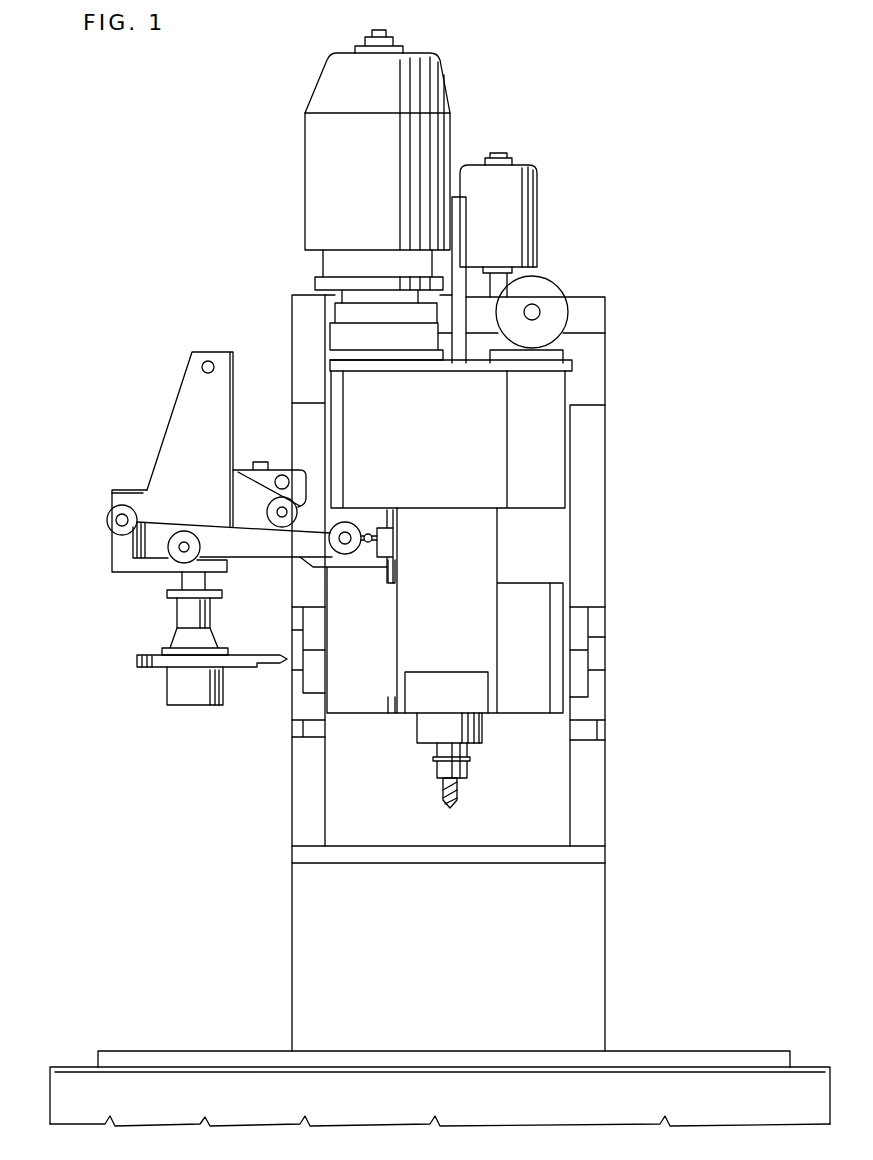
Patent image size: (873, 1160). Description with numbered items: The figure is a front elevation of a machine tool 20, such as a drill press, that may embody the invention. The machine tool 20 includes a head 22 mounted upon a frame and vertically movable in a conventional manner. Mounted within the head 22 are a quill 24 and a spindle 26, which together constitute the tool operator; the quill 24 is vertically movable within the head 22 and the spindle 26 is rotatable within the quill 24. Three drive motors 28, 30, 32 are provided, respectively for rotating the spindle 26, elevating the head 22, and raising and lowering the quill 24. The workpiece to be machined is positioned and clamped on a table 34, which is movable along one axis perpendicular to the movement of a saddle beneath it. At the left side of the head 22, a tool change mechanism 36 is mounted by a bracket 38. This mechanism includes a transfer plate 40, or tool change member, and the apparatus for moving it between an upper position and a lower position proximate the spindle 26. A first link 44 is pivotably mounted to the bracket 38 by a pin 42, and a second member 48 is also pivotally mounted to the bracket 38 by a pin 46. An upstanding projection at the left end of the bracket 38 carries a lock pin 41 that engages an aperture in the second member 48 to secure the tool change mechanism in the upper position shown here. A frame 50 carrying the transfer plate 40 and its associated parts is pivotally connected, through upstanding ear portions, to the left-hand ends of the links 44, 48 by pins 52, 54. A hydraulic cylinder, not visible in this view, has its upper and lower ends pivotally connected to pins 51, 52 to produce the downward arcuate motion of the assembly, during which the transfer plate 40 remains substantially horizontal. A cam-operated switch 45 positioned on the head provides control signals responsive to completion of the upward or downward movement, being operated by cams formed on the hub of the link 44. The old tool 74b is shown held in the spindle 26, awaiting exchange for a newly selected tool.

The machine tool 20 is at (613, 505).
The head 22 is at (553, 440).
The quill 24 is at (430, 731).
The spindle 26 is at (445, 750).
The drive motor 28 is at (325, 146).
The drive motor 30 is at (518, 205).
The drive motor 32 is at (542, 293).
The table 34 is at (688, 1063).
The tool change mechanism 36 is at (176, 383).
The bracket 38 is at (365, 562).
The transfer plate 40 is at (187, 660).
The lock pin 41 is at (283, 474).
The pin 42 is at (347, 522).
The first link 44 is at (267, 547).
The cam-operated switch 45 is at (388, 542).
The pin 46 is at (290, 494).
The second member 48 is at (247, 502).
The frame 50 is at (112, 560).
The pin 51 is at (209, 361).
The pin 52 is at (183, 548).
The pin 54 is at (107, 519).
The old tool 74b is at (457, 790).